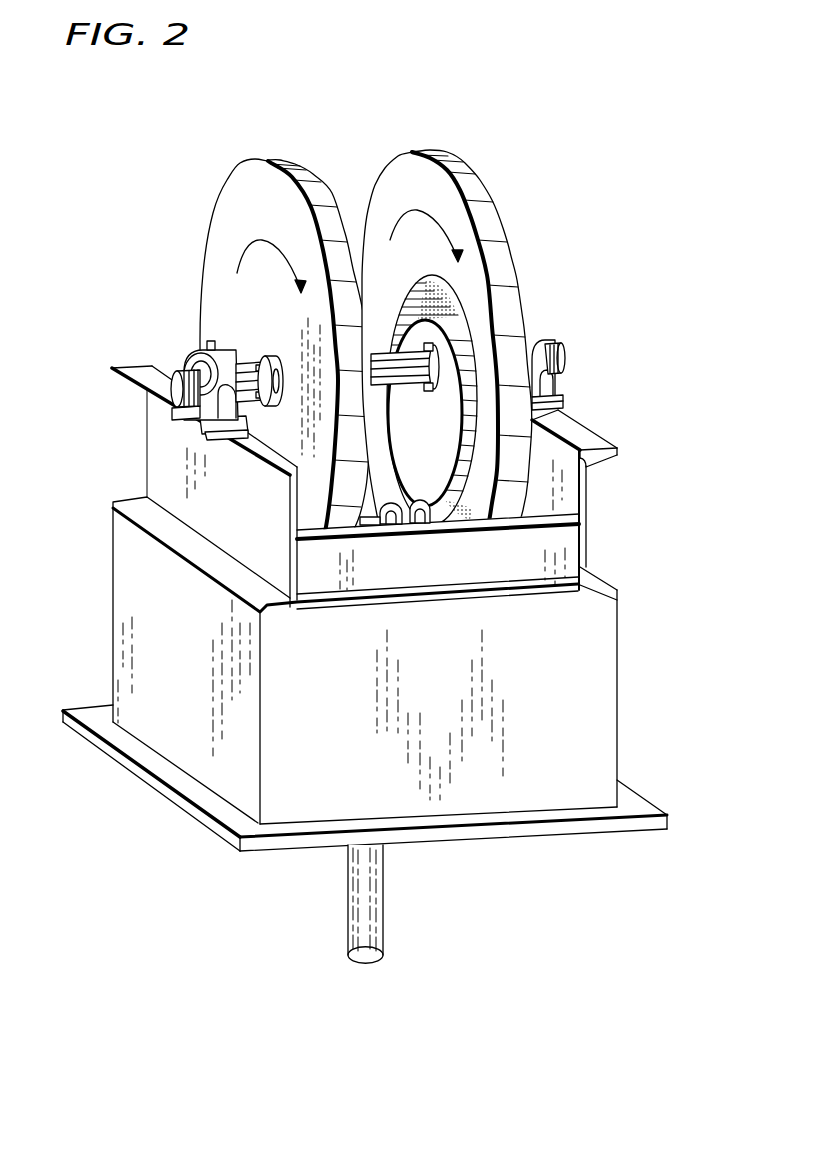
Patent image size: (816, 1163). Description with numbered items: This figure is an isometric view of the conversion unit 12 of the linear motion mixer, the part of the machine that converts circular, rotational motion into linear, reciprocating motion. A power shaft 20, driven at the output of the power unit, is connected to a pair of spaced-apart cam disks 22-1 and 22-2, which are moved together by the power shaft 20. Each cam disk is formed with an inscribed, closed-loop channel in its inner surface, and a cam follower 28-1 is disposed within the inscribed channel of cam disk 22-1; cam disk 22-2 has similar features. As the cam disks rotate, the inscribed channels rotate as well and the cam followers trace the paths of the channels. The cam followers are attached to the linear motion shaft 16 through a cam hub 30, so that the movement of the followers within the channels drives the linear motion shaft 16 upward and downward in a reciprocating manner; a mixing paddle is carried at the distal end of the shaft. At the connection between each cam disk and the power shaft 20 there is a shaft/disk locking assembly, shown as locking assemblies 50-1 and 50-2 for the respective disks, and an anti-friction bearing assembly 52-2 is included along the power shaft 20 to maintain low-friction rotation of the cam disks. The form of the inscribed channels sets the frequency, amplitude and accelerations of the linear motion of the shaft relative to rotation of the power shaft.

The conversion unit 12 is at (178, 133).
The linear motion shaft 16 is at (365, 896).
The power shaft 20 is at (429, 349).
The cam disk 22-1 is at (457, 163).
The cam disk 22-2 is at (303, 163).
The cam follower 28-1 is at (450, 517).
The cam hub 30 is at (405, 518).
The shaft/disk locking assembly 50-1 is at (592, 350).
The shaft/disk locking assembly 50-2 is at (240, 343).
The anti-friction bearing assembly 52-2 is at (183, 370).